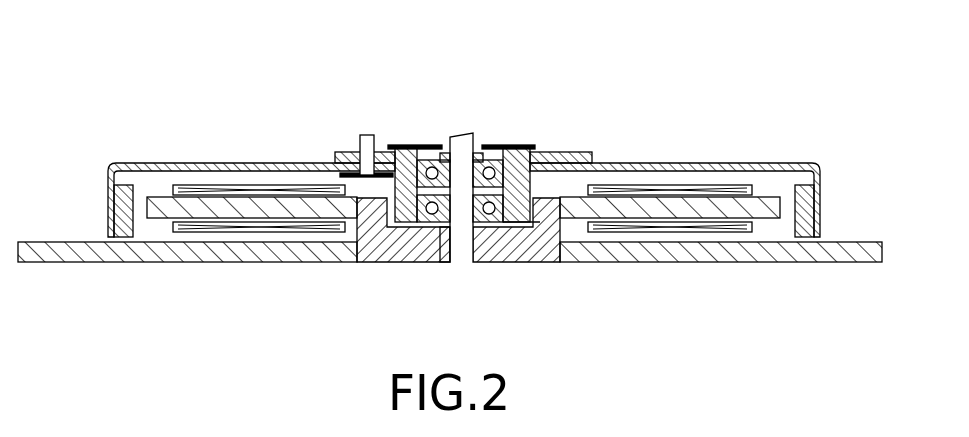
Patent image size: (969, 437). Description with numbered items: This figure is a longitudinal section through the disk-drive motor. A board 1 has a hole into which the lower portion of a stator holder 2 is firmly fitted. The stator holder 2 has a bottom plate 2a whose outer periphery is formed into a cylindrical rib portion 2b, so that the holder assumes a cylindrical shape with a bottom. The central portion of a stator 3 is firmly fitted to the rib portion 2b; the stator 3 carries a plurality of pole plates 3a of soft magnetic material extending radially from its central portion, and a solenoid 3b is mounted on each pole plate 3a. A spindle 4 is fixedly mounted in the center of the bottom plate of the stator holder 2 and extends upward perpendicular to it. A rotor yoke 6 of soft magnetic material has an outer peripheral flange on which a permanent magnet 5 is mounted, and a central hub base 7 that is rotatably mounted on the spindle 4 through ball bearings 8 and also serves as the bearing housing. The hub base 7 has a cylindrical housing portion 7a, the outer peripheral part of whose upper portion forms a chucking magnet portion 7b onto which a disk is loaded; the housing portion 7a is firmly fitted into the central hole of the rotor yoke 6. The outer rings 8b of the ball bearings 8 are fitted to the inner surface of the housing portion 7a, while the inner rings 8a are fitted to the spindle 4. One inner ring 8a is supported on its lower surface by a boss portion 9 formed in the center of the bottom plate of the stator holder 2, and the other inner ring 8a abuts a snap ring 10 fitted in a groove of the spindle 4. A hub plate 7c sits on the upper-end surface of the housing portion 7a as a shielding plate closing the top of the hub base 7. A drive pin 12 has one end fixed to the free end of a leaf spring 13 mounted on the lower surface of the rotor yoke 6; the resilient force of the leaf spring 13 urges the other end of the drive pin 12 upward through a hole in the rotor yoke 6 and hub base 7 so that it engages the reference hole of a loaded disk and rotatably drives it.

The board 1 is at (725, 256).
The stator holder 2 is at (474, 256).
The bottom plate 2a is at (380, 263).
The cylindrical rib portion 2b is at (593, 262).
The stator 3 is at (463, 174).
The pole plates 3a is at (158, 200).
The solenoid 3b is at (200, 190).
The spindle 4 is at (460, 263).
The permanent magnet 5 is at (113, 197).
The rotor yoke 6 is at (157, 164).
The hub base 7 is at (521, 193).
The housing portion 7a is at (538, 262).
The chucking magnet portion 7b is at (593, 162).
The hub plate 7c is at (436, 152).
The ball bearings 8 is at (455, 226).
The inner rings 8a is at (482, 262).
The outer rings 8b is at (500, 262).
The boss portion 9 is at (437, 259).
The snap ring 10 is at (488, 150).
The drive pin 12 is at (368, 135).
The leaf spring 13 is at (330, 158).